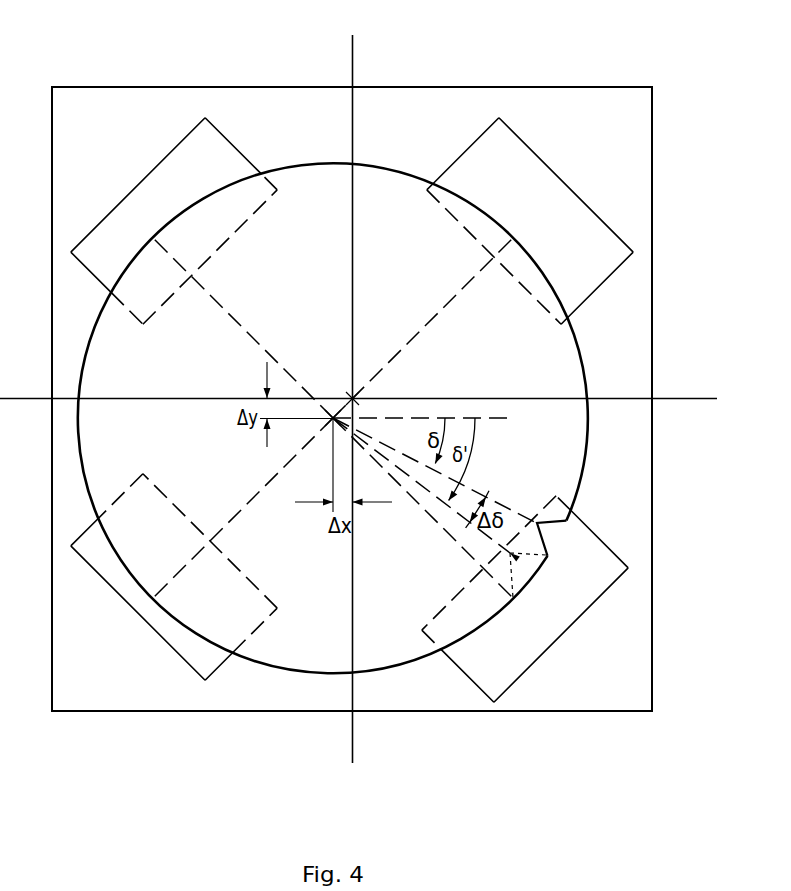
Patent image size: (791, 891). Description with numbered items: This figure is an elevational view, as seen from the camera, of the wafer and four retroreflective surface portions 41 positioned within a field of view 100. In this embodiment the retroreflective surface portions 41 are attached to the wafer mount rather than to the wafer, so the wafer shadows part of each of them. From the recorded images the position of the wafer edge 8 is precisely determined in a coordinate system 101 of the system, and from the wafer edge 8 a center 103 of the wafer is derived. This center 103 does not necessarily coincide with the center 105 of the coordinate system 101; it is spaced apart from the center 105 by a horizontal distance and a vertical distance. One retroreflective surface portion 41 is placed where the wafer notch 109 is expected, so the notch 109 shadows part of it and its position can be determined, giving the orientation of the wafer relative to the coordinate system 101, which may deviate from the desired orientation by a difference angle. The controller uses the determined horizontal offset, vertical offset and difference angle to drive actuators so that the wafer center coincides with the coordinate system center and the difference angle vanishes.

The field of view 100 is at (453, 86).
The coordinate system 101 is at (352, 52).
The wafer edge 8 is at (272, 673).
The retroreflective surface portions 41 is at (137, 182).
The center of the wafer 103 is at (333, 416).
The center of the coordinate system 105 is at (357, 398).
The wafer notch 109 is at (557, 524).